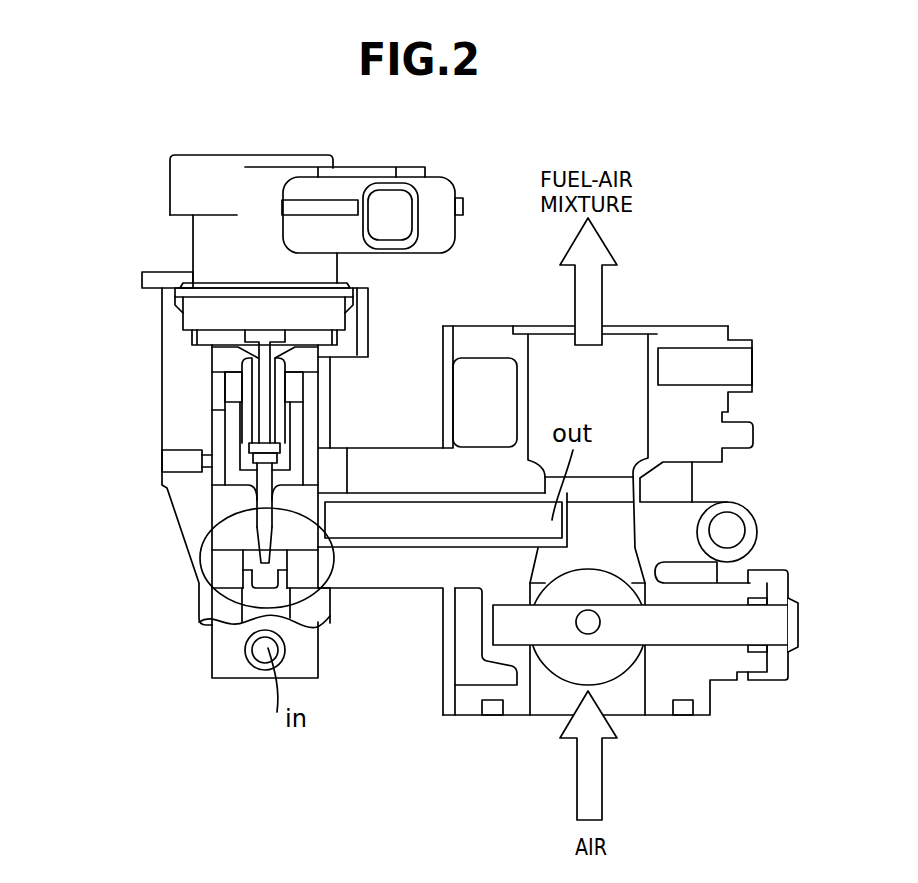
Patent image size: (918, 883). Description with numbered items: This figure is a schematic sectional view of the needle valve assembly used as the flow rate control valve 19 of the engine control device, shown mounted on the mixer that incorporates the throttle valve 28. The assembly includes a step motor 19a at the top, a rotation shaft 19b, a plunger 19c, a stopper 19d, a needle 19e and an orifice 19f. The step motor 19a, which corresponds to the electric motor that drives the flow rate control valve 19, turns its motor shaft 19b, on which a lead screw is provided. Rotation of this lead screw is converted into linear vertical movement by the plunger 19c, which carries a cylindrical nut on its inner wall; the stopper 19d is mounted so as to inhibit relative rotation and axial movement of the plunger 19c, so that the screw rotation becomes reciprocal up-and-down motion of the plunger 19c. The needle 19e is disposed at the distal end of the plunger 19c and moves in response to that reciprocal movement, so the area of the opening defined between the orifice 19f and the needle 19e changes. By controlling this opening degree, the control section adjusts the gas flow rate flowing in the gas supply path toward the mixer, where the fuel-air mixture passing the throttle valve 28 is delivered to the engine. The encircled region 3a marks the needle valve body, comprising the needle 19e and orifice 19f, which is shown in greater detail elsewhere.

The flow rate control valve 19 is at (177, 583).
The step motor 19a is at (250, 220).
The rotation shaft 19b is at (263, 417).
The plunger 19c is at (307, 413).
The stopper 19d is at (180, 455).
The needle 19e is at (265, 542).
The orifice 19f is at (250, 578).
The fuel outlet passage 3a is at (305, 598).
The throttle valve 28 is at (598, 595).